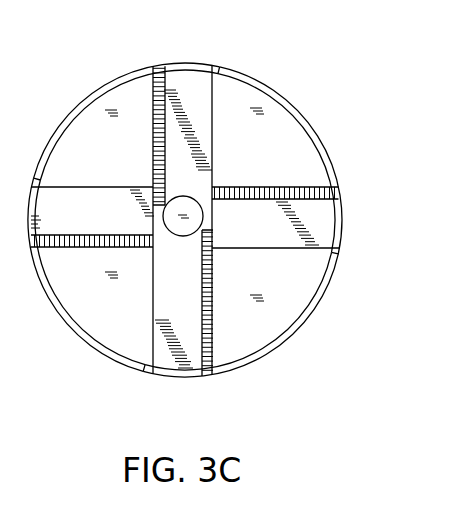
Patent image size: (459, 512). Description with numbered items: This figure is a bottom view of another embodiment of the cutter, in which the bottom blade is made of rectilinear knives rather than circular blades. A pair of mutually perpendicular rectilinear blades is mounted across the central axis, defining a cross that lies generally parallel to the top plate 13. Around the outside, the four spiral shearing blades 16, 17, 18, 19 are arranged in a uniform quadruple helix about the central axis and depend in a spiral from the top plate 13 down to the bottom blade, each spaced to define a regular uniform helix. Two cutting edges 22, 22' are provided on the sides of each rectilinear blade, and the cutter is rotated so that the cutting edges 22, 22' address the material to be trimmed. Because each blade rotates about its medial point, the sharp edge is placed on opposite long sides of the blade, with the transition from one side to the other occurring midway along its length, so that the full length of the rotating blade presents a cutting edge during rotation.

The top plate 13 is at (247, 338).
The spiral shearing blade 16 is at (307, 307).
The spiral shearing blade 17 is at (78, 328).
The spiral shearing blade 18 is at (283, 102).
The spiral shearing blade 19 is at (82, 102).
The cutting edge 22 is at (210, 221).
The cutting edge 22' is at (185, 246).